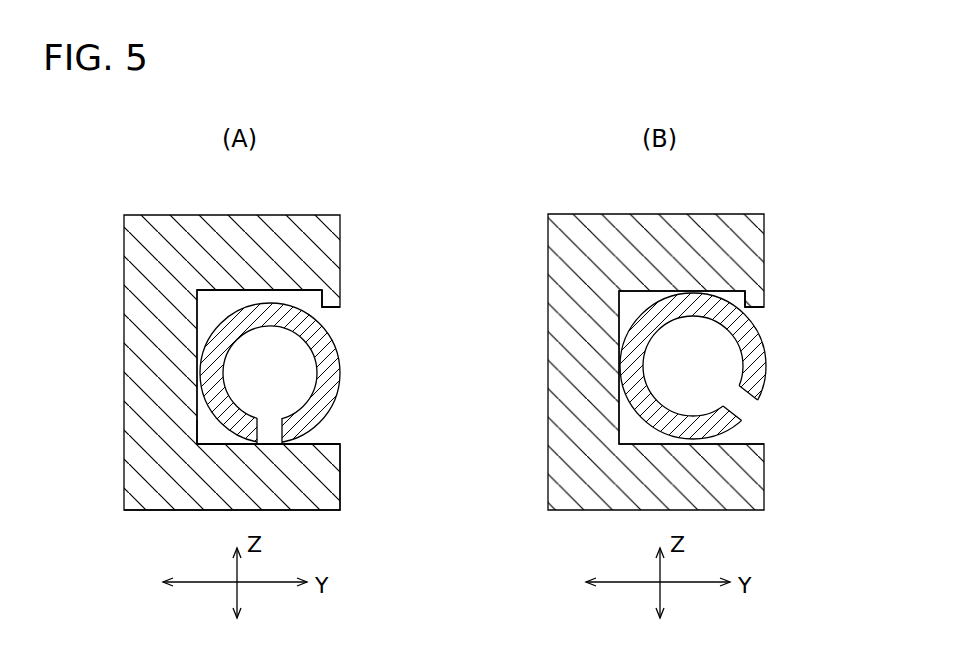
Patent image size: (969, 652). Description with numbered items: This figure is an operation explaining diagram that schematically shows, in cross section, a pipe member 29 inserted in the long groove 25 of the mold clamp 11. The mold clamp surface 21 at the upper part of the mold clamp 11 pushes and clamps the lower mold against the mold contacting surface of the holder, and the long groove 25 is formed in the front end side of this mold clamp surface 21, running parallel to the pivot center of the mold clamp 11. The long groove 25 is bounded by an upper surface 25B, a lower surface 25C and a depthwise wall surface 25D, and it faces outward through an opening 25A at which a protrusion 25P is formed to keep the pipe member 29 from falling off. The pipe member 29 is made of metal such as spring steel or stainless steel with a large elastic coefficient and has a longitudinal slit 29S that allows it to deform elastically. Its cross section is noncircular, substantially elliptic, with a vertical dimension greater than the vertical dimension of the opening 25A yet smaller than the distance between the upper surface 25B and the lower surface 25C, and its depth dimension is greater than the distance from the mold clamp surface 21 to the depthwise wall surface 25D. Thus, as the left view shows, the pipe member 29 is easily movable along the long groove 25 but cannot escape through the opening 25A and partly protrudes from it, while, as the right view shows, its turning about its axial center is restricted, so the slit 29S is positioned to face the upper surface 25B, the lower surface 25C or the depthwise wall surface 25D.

The mold clamp 11 is at (148, 255).
The mold clamp surface 21 is at (343, 478).
The long groove 25 is at (208, 315).
The opening 25A is at (336, 308).
The upper surface 25B is at (215, 297).
The lower surface 25C is at (328, 442).
The depthwise wall surface 25D is at (203, 445).
The protrusion 25P is at (337, 300).
The pipe member 29 is at (205, 380).
The slit 29S is at (270, 432).